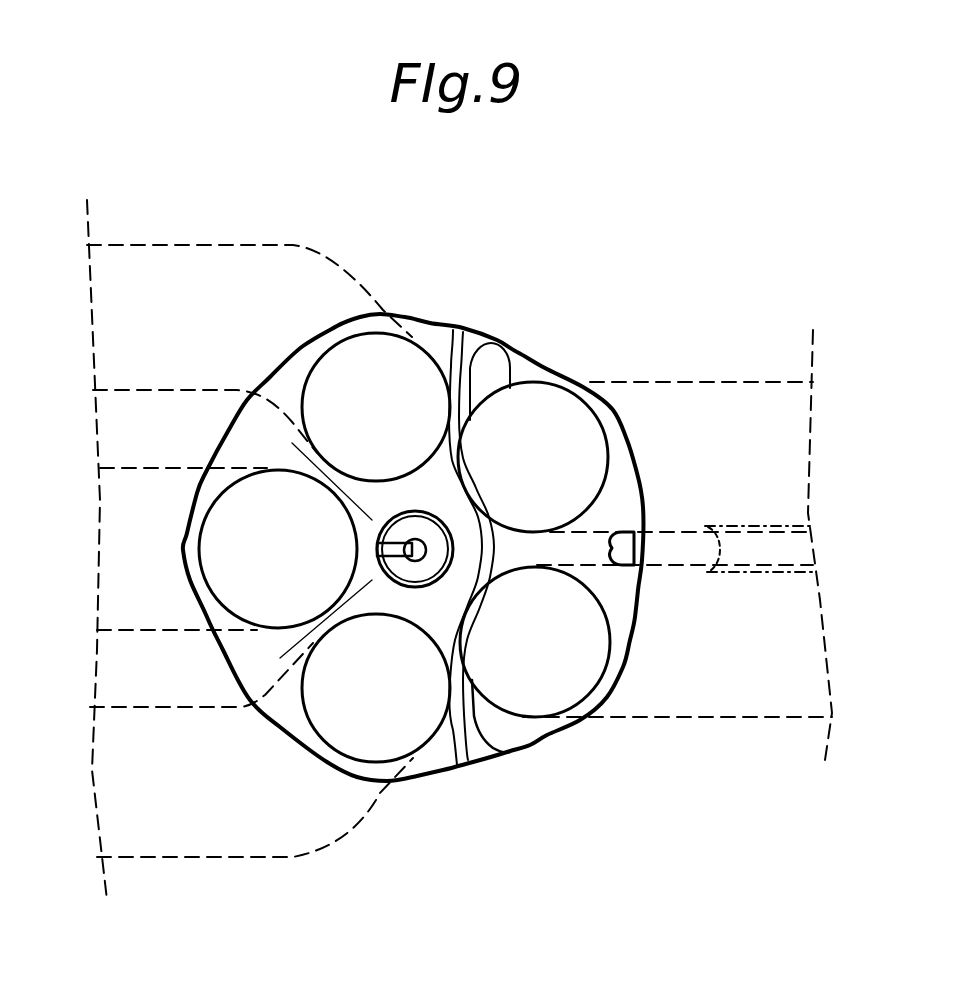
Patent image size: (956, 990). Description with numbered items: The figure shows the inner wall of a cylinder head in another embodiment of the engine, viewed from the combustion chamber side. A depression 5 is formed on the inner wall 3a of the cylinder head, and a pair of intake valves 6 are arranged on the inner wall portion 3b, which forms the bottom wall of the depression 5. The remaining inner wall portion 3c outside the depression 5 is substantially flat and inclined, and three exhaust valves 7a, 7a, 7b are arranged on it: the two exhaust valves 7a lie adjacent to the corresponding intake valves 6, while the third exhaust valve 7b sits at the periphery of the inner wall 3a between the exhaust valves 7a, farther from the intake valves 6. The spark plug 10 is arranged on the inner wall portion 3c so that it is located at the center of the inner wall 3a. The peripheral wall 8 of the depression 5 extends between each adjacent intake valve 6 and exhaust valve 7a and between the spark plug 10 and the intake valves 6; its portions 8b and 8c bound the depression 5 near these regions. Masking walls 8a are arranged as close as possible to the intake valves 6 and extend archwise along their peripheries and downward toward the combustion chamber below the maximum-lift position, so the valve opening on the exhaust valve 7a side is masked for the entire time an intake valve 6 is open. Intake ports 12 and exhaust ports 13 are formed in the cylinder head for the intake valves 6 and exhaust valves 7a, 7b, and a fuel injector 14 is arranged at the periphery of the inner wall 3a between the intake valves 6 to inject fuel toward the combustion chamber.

The inner wall of the cylinder head 3a is at (437, 336).
The inner wall portion of the cylinder head 3b is at (622, 593).
The inner wall portion of the cylinder head 3c is at (418, 598).
The depression 5 is at (517, 555).
The intake valve 6 is at (560, 410).
The exhaust valve 7a is at (342, 357).
The exhaust valve 7b is at (222, 500).
The peripheral wall of the depression 8 is at (562, 693).
The masking wall 8a is at (460, 462).
The second passage wall 8b is at (477, 528).
The separating web 8c is at (433, 340).
The spark plug 10 is at (408, 530).
The intake port 12 is at (643, 388).
The exhaust port 13 is at (200, 243).
The fuel injector 14 is at (787, 530).